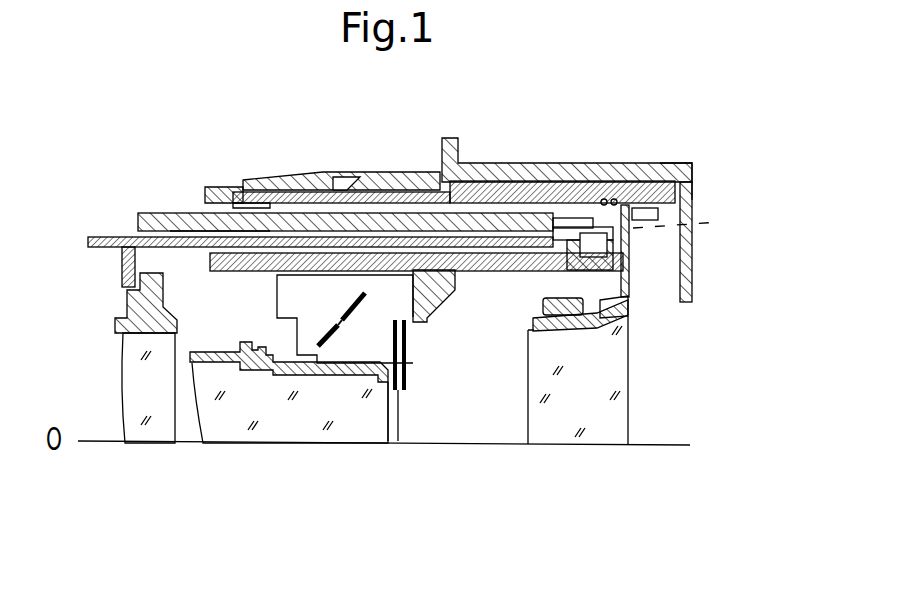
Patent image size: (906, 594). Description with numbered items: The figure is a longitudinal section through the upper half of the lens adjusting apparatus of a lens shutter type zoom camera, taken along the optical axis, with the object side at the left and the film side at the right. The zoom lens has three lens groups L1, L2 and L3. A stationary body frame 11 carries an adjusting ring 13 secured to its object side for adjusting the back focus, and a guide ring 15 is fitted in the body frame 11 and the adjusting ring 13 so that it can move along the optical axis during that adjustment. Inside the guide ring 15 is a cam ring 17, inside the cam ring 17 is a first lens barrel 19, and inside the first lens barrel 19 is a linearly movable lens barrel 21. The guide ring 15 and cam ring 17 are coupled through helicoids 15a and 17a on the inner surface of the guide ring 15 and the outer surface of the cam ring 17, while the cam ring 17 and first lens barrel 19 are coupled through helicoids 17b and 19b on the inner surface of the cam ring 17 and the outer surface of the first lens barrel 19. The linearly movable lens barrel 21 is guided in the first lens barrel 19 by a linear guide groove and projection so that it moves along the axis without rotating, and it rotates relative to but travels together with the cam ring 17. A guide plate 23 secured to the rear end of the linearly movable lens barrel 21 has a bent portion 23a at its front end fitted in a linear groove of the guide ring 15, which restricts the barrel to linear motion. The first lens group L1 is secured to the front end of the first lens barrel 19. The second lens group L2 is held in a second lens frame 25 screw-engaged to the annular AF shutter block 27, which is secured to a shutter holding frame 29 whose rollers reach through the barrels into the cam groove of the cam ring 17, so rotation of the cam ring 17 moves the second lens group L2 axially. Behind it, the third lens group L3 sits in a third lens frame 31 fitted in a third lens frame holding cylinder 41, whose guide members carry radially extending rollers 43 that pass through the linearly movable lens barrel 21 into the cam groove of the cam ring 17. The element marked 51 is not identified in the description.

The body frame 11 is at (503, 163).
The adjusting ring 13 is at (360, 172).
The guide ring 15 is at (300, 198).
The helicoid 15a is at (270, 208).
The cam ring 17 is at (193, 213).
The helicoid 17a is at (607, 170).
The helicoid 17b is at (220, 232).
The first lens barrel 19 is at (112, 237).
The helicoid 19b is at (522, 238).
The linearly movable lens barrel 21 is at (213, 263).
The guide plate 23 is at (633, 246).
The bent portion 23a is at (633, 163).
The second lens frame 25 is at (217, 362).
The AF shutter block 27 is at (363, 343).
The shutter holding frame 29 is at (441, 290).
The third lens frame 31 is at (630, 298).
The third lens frame holding cylinder 41 is at (556, 298).
The rollers 43 is at (693, 220).
The guide bushing 51 is at (530, 338).
The first lens group L1 is at (151, 446).
The second lens group L2 is at (293, 447).
The third lens group L3 is at (598, 447).